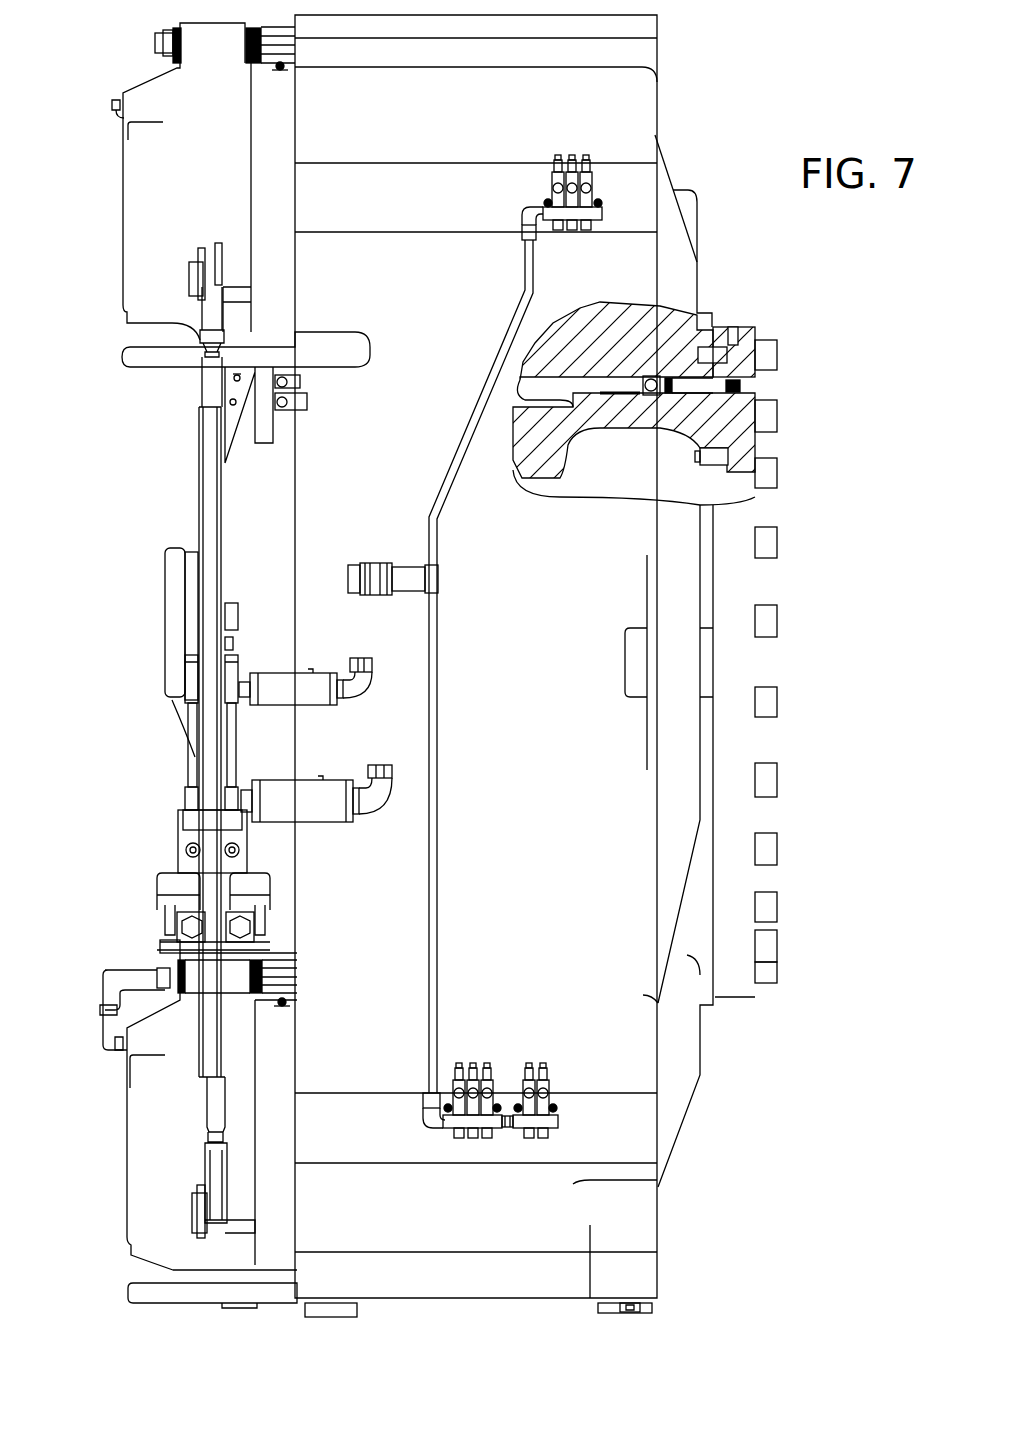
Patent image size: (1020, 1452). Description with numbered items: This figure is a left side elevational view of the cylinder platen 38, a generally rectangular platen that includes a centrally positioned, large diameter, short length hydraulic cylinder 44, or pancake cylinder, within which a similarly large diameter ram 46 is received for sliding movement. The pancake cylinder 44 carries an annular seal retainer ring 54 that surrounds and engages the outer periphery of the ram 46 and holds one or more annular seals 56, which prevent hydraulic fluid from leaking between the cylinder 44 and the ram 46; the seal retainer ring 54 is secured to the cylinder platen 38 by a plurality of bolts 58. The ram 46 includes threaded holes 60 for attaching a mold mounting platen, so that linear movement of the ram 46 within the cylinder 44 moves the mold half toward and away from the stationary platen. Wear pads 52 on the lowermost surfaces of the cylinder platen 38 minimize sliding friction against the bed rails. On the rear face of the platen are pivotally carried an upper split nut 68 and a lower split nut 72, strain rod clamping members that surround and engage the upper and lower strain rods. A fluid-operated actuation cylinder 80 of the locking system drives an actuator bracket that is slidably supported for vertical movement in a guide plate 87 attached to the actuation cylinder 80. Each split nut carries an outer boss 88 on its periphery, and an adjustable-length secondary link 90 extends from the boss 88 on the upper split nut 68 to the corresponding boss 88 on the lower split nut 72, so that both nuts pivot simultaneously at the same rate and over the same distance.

The cylinder platen 38 is at (615, 103).
The hydraulic cylinder 44 is at (660, 325).
The ram 46 is at (600, 430).
The wear pads 52 is at (325, 1305).
The seal retainer ring 54 is at (745, 330).
The annular seals 56 is at (738, 385).
The bolts 58 is at (768, 537).
The threaded holes 60 is at (745, 432).
The upper split nut 68 is at (158, 92).
The lower split nut 72 is at (150, 1125).
The actuation cylinder 80 is at (193, 757).
The guide plate 87 is at (175, 635).
The outer boss 88 is at (190, 276).
The secondary link 90 is at (205, 512).